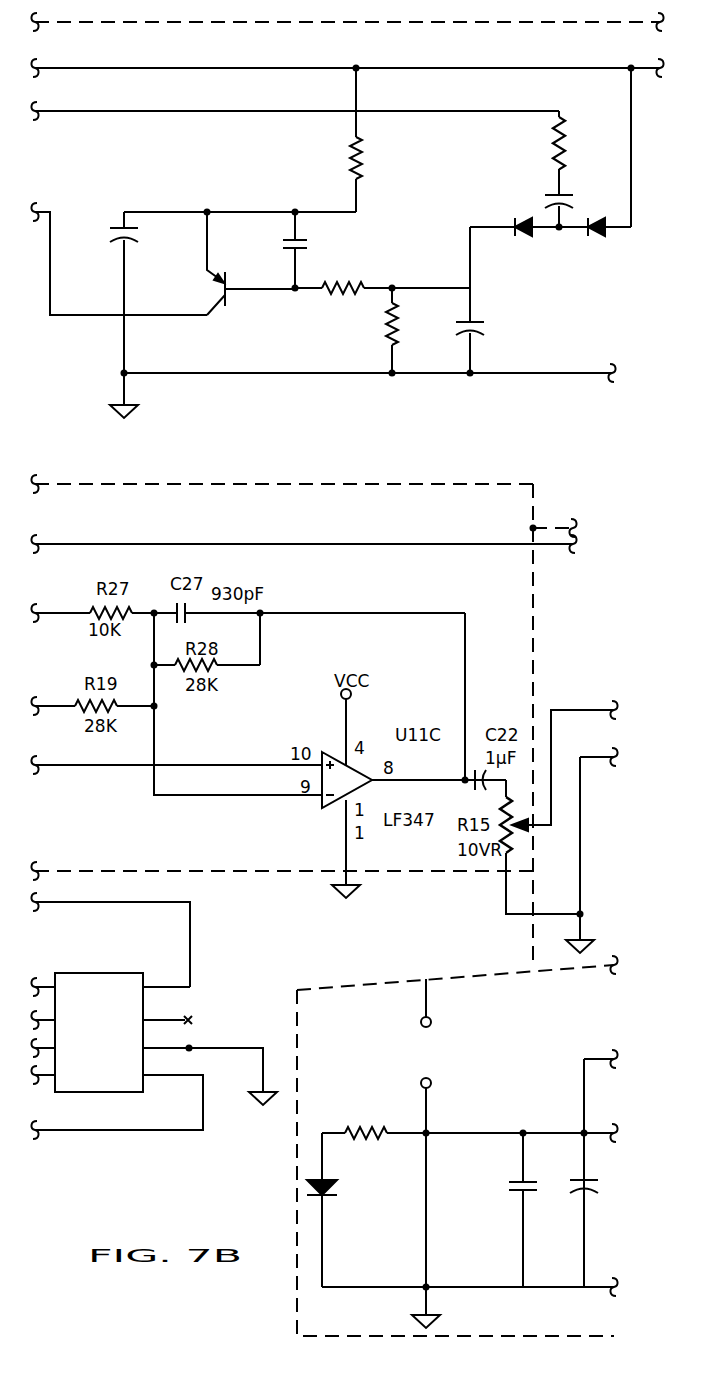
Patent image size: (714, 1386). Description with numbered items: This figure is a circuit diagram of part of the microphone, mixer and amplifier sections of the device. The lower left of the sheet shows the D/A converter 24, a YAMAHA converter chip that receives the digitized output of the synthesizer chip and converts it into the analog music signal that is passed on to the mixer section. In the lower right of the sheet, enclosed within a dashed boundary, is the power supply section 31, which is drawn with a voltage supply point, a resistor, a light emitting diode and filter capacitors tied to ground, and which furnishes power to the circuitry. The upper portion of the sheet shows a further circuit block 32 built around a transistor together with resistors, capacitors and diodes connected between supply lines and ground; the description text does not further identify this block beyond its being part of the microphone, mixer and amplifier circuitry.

The transistor amplifier/detector circuit block 32 is at (193, 168).
The power supply section 31 is at (537, 1043).
The D/A converter 24 is at (97, 1070).